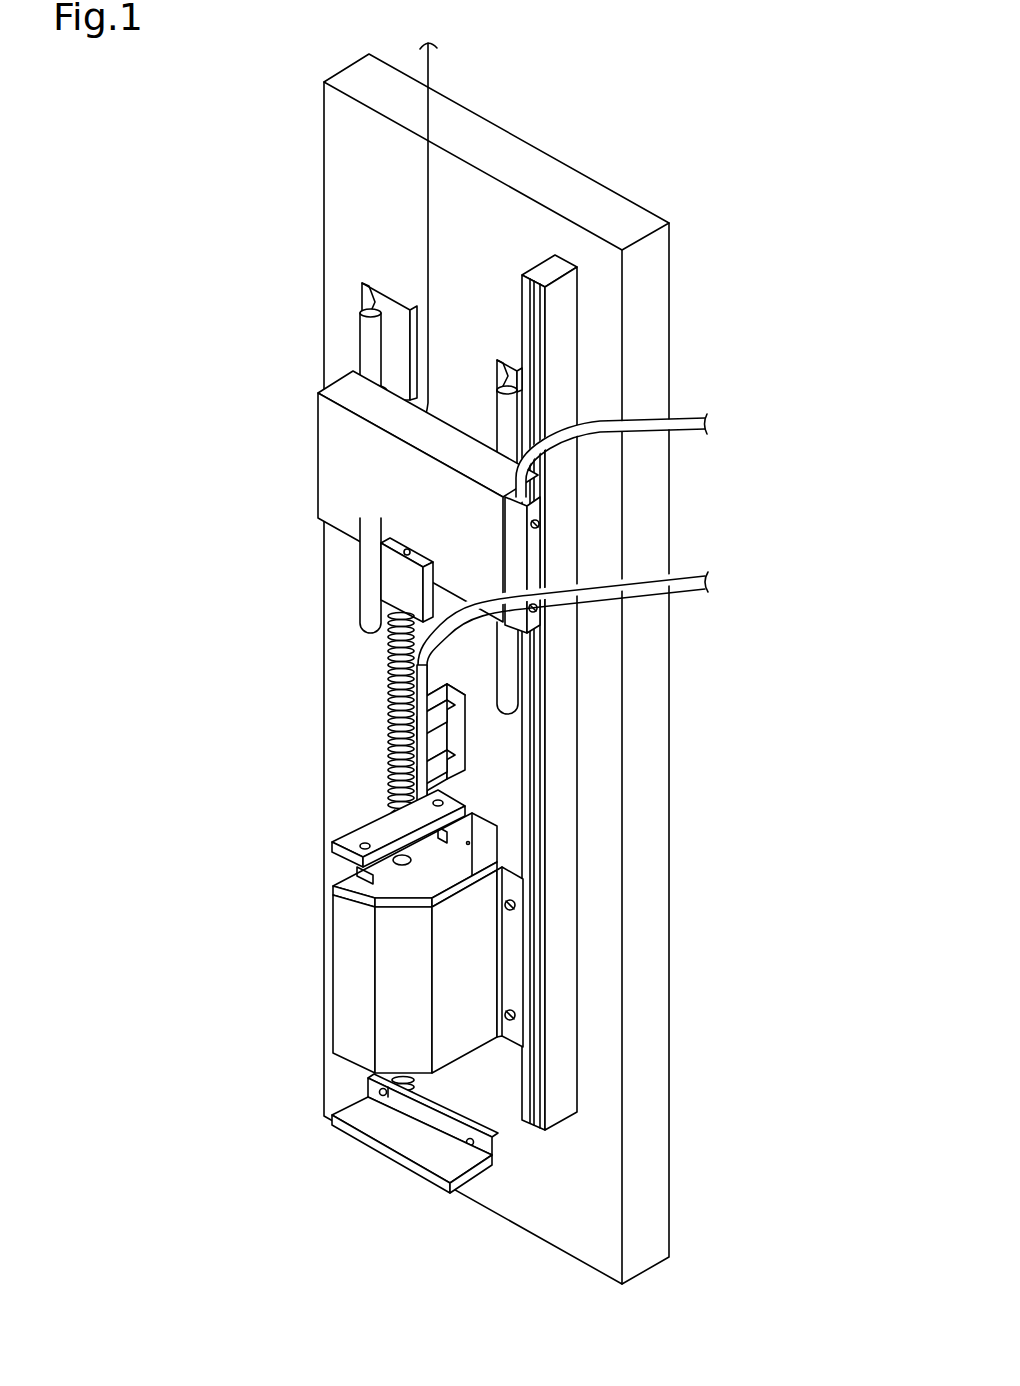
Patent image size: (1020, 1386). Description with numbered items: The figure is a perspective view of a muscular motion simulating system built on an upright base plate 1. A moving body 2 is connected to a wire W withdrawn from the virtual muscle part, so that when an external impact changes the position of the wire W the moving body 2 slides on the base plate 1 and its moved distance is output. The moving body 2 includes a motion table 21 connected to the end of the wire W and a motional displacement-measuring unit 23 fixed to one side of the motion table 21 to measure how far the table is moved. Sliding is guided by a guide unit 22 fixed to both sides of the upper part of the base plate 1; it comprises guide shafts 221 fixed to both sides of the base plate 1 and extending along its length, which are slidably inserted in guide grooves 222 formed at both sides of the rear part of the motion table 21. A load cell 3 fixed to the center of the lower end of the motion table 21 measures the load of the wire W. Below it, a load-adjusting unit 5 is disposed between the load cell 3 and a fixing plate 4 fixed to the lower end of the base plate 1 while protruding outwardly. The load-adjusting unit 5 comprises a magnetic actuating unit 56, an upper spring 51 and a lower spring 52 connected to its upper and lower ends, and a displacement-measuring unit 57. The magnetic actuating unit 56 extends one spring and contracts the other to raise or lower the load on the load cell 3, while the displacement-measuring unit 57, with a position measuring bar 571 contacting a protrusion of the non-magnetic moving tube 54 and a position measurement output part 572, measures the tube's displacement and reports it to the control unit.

The base plate 1 is at (565, 1223).
The moving body 2 is at (339, 498).
The motion table 21 is at (330, 460).
The guide unit 22 is at (353, 383).
The guide shafts 221 is at (358, 330).
The guide grooves 222 is at (355, 373).
The motional displacement-measuring unit 23 is at (512, 521).
The load cell 3 is at (393, 583).
The fixing plate 4 is at (438, 1160).
The load-adjusting unit 5 is at (508, 898).
The upper spring 51 is at (387, 773).
The lower spring 52 is at (386, 1105).
The non-magnetic moving tube 54 is at (342, 870).
The magnetic actuating unit 56 is at (350, 1013).
The displacement-measuring unit 57 is at (619, 744).
The position measuring bar 571 is at (452, 786).
The position measurement output part 572 is at (425, 741).
The wire W is at (433, 60).